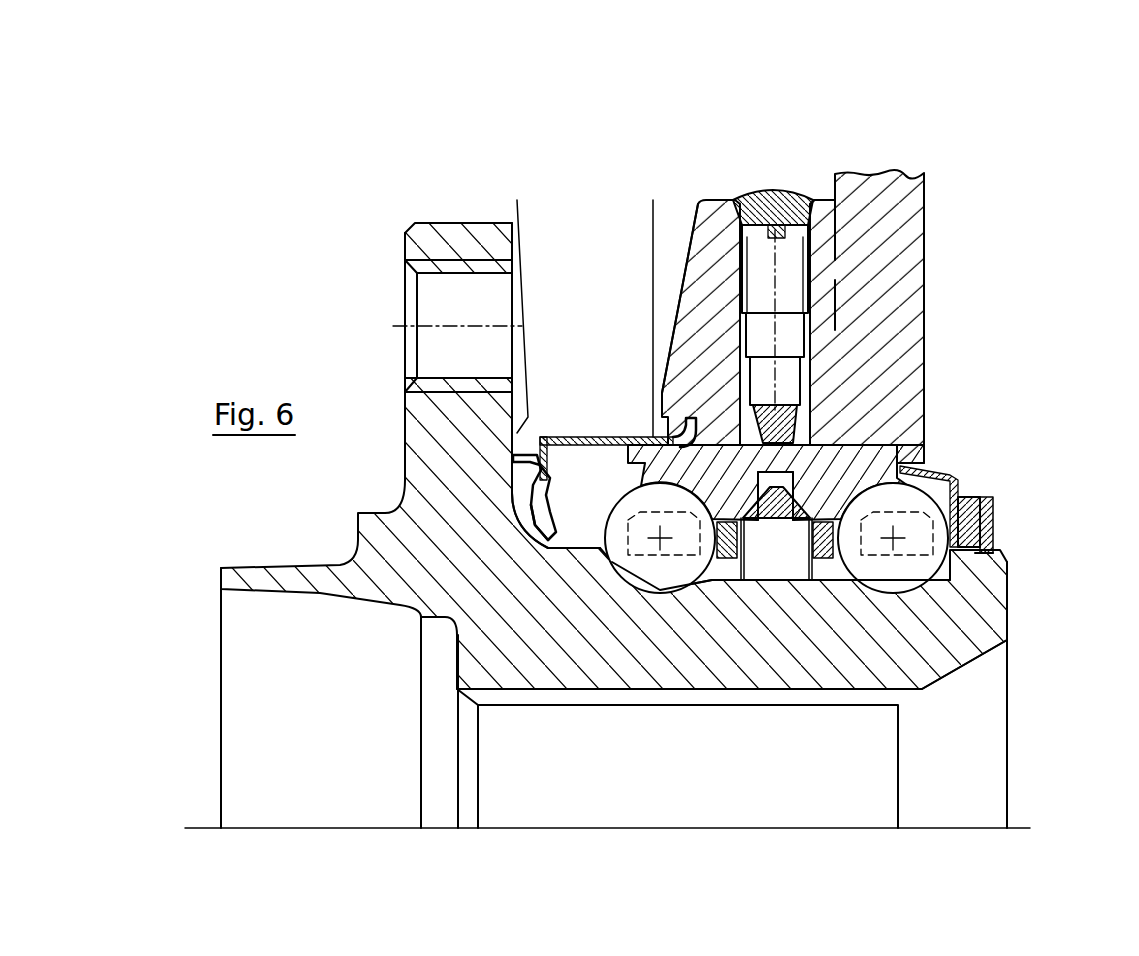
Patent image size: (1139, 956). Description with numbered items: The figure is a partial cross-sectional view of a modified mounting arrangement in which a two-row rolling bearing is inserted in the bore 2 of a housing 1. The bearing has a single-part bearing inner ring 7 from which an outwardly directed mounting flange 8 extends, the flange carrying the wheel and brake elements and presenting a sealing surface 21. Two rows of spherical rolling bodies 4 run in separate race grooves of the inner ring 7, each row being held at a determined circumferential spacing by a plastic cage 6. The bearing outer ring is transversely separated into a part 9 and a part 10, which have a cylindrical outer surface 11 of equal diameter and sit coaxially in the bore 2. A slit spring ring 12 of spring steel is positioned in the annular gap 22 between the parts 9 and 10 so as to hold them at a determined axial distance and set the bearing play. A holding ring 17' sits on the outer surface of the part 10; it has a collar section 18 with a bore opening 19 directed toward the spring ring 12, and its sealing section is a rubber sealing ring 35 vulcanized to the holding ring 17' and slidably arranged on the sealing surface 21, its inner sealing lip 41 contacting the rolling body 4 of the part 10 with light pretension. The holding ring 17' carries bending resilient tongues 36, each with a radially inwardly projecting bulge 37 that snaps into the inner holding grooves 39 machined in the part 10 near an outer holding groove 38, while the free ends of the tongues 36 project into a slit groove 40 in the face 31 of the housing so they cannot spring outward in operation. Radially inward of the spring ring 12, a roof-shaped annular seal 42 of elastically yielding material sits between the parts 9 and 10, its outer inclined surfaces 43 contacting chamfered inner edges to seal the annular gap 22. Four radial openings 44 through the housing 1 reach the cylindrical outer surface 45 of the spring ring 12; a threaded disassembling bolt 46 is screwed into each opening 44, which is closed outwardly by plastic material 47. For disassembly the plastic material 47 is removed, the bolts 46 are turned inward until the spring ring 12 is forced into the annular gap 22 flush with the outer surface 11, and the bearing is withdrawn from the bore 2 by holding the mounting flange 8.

The housing 1 is at (897, 405).
The bore 2 is at (650, 463).
The rolling bodies 4 is at (927, 540).
The plastic cage 6 is at (980, 545).
The bearing inner ring 7 is at (922, 640).
The mounting flange 8 is at (445, 232).
The part of bearing outer ring 9 is at (828, 522).
The part of bearing outer ring 10 is at (475, 668).
The cylindrical outer surface 11 is at (865, 497).
The spring ring 12 is at (835, 405).
The holding ring 17' is at (606, 280).
The collar section 18 is at (635, 588).
The bore opening 19 is at (605, 560).
The sealing surface 21 is at (517, 200).
The annular gap 22 is at (777, 487).
The face of the housing 31 is at (698, 204).
The sealing ring 35 is at (513, 455).
The bending resilient tongues 36 is at (752, 320).
The radially inwardly projecting bulge 37 is at (653, 200).
The outer holding groove 38 is at (555, 548).
The inner holding grooves 39 is at (745, 462).
The slit groove 40 is at (775, 290).
The inner sealing lip 41 is at (525, 505).
The annular seal 42 is at (757, 518).
The outer inclined surfaces 43 is at (963, 483).
The openings 44 is at (826, 383).
The cylindrical outer surface of the spring ring 45 is at (873, 307).
The threaded disassembling bolt 46 is at (835, 258).
The plastic material 47 is at (800, 192).